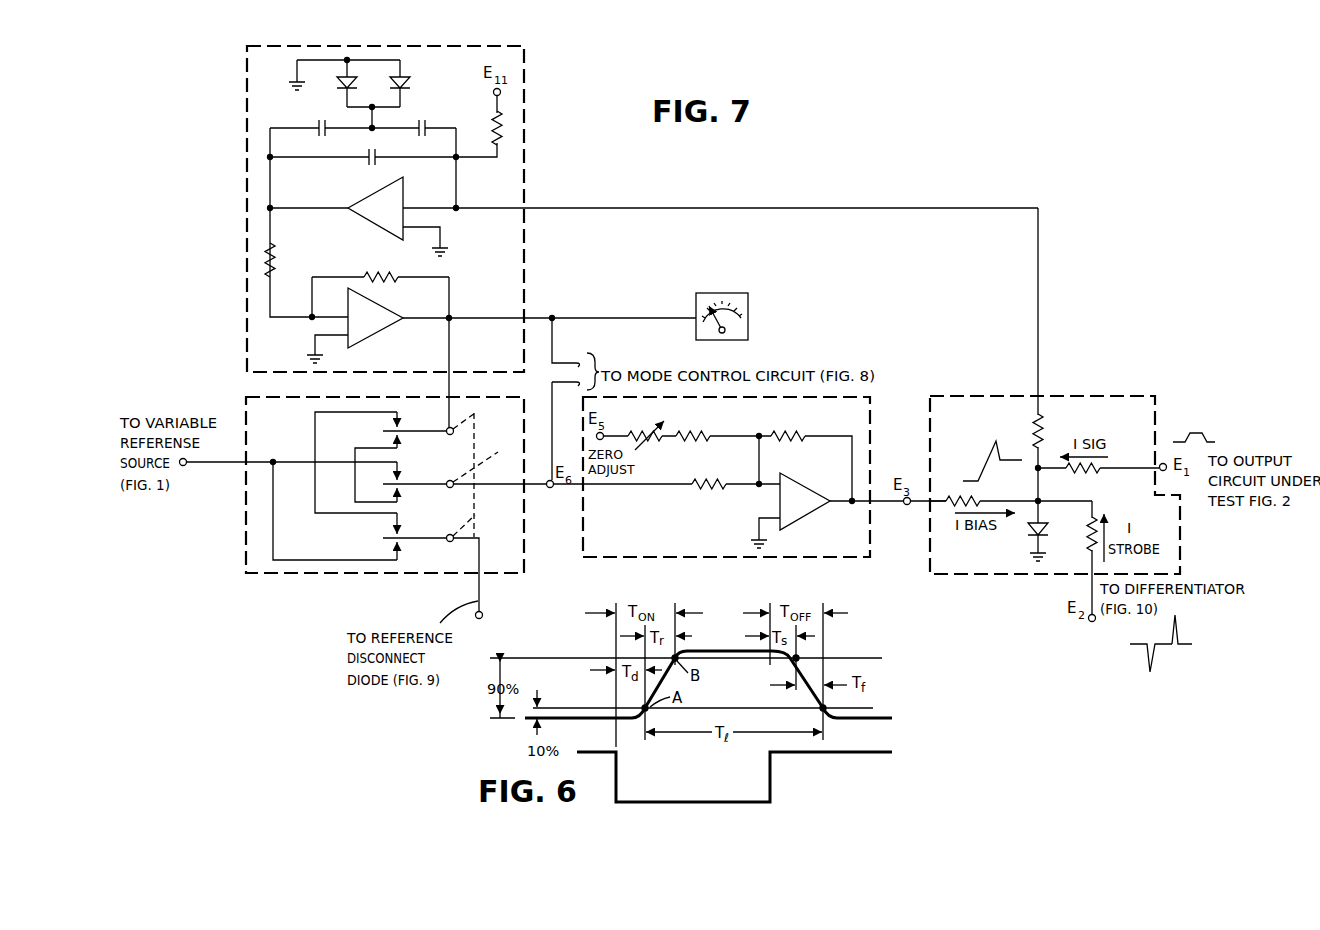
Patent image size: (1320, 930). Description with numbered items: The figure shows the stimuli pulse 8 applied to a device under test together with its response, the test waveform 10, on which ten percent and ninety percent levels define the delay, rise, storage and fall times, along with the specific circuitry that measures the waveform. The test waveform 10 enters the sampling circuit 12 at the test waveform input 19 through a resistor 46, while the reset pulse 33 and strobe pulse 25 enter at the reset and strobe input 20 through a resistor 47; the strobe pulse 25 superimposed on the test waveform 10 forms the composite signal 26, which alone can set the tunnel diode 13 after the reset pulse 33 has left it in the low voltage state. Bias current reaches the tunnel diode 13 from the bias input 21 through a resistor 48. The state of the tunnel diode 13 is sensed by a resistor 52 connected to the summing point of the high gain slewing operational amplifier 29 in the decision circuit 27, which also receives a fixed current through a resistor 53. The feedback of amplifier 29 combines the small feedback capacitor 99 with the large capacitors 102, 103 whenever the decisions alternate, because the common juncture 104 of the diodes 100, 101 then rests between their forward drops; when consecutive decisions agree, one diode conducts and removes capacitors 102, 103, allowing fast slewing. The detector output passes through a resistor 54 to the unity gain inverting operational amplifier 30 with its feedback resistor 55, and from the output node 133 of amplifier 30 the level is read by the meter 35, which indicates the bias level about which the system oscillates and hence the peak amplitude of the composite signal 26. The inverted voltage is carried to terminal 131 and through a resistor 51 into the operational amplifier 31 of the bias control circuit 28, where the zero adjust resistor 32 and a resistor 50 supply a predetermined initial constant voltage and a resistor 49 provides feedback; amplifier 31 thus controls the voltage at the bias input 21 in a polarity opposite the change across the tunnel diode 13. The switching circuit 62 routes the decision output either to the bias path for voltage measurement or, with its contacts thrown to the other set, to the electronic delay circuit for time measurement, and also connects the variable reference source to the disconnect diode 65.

In FIG. 7, the decision circuit 27 is at (527, 99).
In FIG. 7, the diode 100 is at (340, 95).
In FIG. 7, the diode 101 is at (410, 83).
In FIG. 7, the capacitor 102 is at (318, 136).
In FIG. 7, the capacitor 103 is at (426, 125).
In FIG. 7, the common juncture 104 is at (370, 129).
In FIG. 7, the feedback capacitor 99 is at (368, 162).
In FIG. 7, the resistor 53 is at (495, 113).
In FIG. 7, the high gain operational amplifier 29 is at (375, 222).
In FIG. 7, the resistor 54 is at (277, 247).
In FIG. 7, the resistor 55 is at (387, 275).
In FIG. 7, the unity gain inverting operational amplifier 30 is at (382, 307).
In FIG. 7, the junction 133 is at (553, 317).
In FIG. 7, the meter 35 is at (718, 292).
In FIG. 7, the switching circuit 62 is at (242, 507).
In FIG. 7, the disconnect diode 65 is at (482, 612).
In FIG. 7, the terminal E6 131 is at (551, 489).
In FIG. 7, the bias control circuit 28 is at (875, 443).
In FIG. 7, the zero adjust resistor 32 is at (641, 431).
In FIG. 7, the resistor 50 is at (715, 435).
In FIG. 7, the resistor 49 is at (798, 435).
In FIG. 7, the resistor 51 is at (710, 479).
In FIG. 7, the operational amplifier 31 is at (802, 483).
In FIG. 7, the bias input 21 is at (906, 506).
In FIG. 7, the sampling circuit 12 is at (983, 393).
In FIG. 7, the resistor 52 is at (1034, 423).
In FIG. 7, the tunnel diode 13 is at (1026, 537).
In FIG. 7, the resistor 46 is at (1084, 473).
In FIG. 7, the resistor 48 is at (965, 499).
In FIG. 7, the resistor 47 is at (1089, 524).
In FIG. 7, the composite signal 26 is at (1002, 462).
In FIG. 7, the test waveform input 19 is at (1167, 471).
In FIG. 7, the test waveform 10 is at (1197, 432).
In FIG. 6, the test waveform 10 is at (882, 720).
In FIG. 7, the reset and strobe input 20 is at (1088, 622).
In FIG. 7, the reset pulse 33 is at (1147, 664).
In FIG. 7, the strobe pulse 25 is at (1178, 624).
In FIG. 6, the stimuli pulse 8 is at (855, 753).